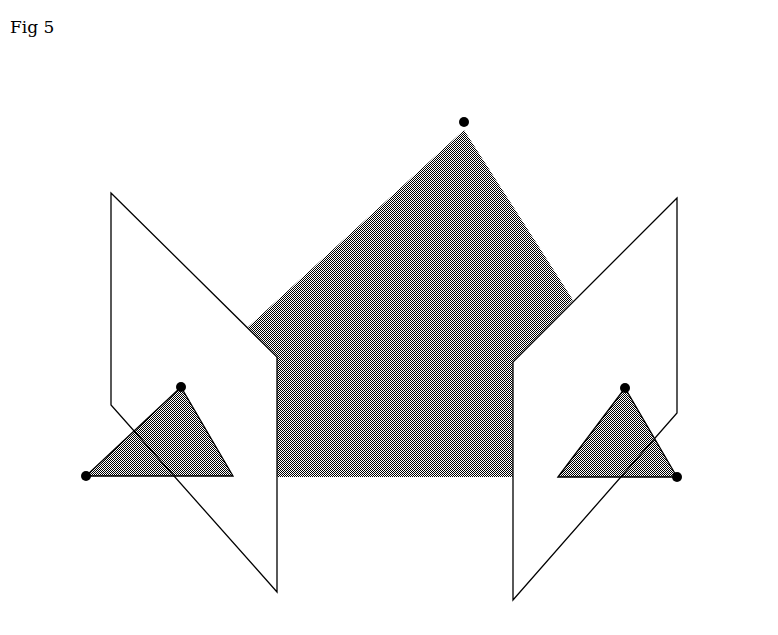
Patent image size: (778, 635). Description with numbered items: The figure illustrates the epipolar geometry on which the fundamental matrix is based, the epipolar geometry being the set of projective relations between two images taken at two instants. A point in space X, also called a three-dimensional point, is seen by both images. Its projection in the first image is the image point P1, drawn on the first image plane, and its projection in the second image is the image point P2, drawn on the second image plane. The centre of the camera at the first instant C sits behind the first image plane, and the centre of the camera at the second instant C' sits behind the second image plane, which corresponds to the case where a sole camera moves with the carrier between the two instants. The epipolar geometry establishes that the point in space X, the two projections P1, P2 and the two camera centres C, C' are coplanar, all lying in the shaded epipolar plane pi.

The point in space X is at (462, 109).
The epipolar plane pi is at (389, 180).
The centre of the camera at the first instant C is at (155, 449).
The centre of the camera at the second instant C' is at (625, 447).
The projection in the first image P1 is at (199, 378).
The projection in the second image P2 is at (626, 373).